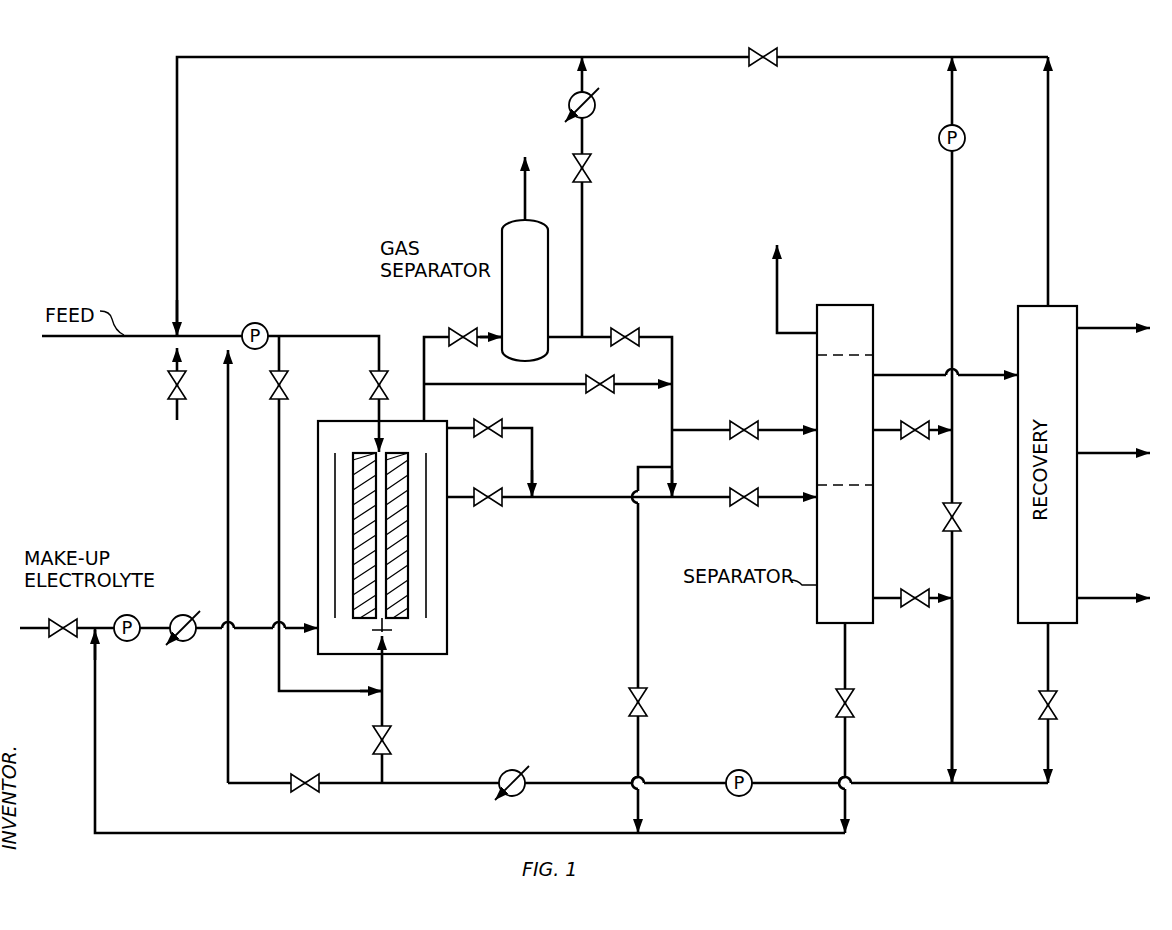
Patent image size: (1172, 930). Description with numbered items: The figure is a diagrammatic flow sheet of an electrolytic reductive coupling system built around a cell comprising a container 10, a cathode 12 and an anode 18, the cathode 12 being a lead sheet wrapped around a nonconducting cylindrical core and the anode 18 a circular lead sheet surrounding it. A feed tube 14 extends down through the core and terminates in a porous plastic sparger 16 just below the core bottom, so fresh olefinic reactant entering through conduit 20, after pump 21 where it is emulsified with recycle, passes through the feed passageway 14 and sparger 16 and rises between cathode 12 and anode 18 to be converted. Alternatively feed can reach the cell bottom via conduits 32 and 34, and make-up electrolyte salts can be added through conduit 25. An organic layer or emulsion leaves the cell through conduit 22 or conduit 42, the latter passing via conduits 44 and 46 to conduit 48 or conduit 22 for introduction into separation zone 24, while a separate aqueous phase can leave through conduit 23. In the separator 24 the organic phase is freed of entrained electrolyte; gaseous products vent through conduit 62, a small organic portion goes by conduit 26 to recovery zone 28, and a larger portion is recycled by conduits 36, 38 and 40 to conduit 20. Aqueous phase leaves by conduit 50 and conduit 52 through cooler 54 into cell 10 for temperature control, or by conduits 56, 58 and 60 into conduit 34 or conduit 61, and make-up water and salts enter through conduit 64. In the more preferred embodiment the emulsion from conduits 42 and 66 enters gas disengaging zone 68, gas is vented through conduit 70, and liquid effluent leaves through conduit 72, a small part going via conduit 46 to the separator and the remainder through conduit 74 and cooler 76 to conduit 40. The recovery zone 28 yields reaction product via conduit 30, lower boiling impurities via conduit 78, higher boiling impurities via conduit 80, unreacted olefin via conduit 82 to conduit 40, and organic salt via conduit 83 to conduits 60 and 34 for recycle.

The container 10 is at (447, 644).
The cathode 12 is at (354, 476).
The feed tube 14 is at (389, 464).
The porous plastic sparger 16 is at (380, 631).
The anode 18 is at (427, 541).
The conduit 20 is at (62, 338).
The pump 21 is at (254, 323).
The conduit 22 is at (535, 462).
The conduit 23 is at (512, 502).
The separation zone 24 is at (844, 304).
The conduit 25 is at (176, 419).
The conduit 26 is at (957, 374).
The recovery zone 28 is at (1054, 300).
The conduit 30 is at (1106, 331).
The conduit 32 is at (278, 460).
The conduit 34 is at (384, 696).
The conduit 36 is at (881, 425).
The conduit 38 is at (953, 247).
The conduit 40 is at (177, 115).
The conduit 42 is at (428, 412).
The conduit 44 is at (644, 388).
The conduit 46 is at (656, 336).
The conduit 48 is at (788, 428).
The conduit 50 is at (372, 833).
The conduit 52 is at (142, 620).
The cooler 54 is at (185, 638).
The conduit 56 is at (930, 608).
The conduit 58 is at (953, 742).
The conduit 60 is at (766, 783).
The conduit 61 is at (228, 756).
The conduit 62 is at (776, 278).
The conduit 64 is at (30, 630).
The conduit 66 is at (484, 334).
The gas disengaging zone 68 is at (536, 272).
The conduit 70 is at (522, 206).
The conduit 72 is at (554, 340).
The conduit 74 is at (585, 146).
The cooler 76 is at (568, 102).
The conduit 78 is at (1110, 453).
The conduit 80 is at (1110, 606).
The conduit 82 is at (1050, 201).
The conduit 83 is at (1050, 768).